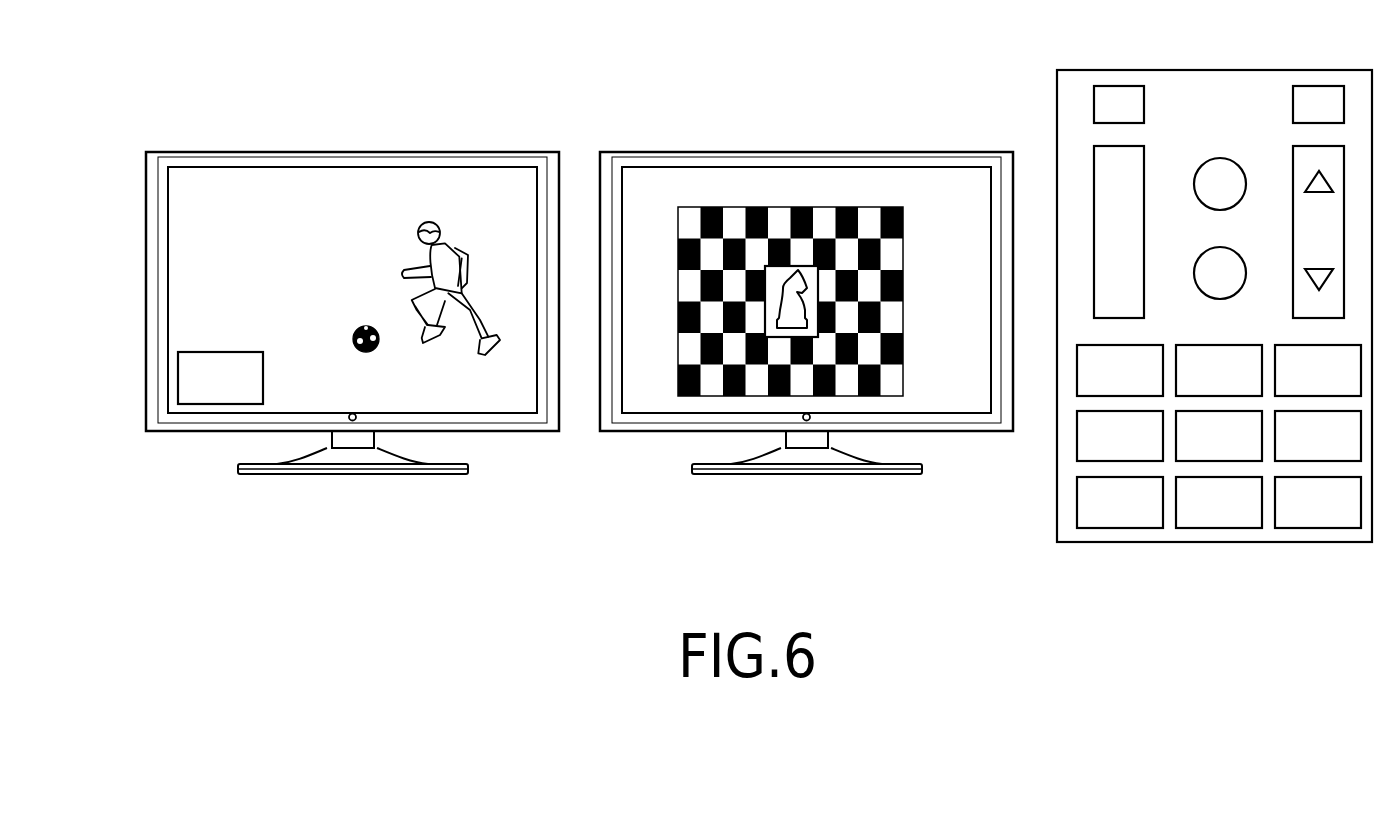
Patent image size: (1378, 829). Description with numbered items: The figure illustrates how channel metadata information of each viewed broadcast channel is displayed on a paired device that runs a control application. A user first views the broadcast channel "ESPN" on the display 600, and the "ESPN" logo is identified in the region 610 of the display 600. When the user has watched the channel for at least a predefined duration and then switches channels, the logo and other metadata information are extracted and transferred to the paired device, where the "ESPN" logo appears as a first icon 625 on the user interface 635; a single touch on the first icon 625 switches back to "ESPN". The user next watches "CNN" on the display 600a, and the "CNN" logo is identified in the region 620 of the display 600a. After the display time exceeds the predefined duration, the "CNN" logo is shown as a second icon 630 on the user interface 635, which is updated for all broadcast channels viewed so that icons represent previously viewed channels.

The display 600 is at (468, 152).
The display 600a is at (651, 152).
The region 610 is at (243, 349).
The region 620 is at (959, 212).
The first icon 625 is at (1138, 341).
The second icon 630 is at (1241, 341).
The user interface 635 is at (1214, 286).